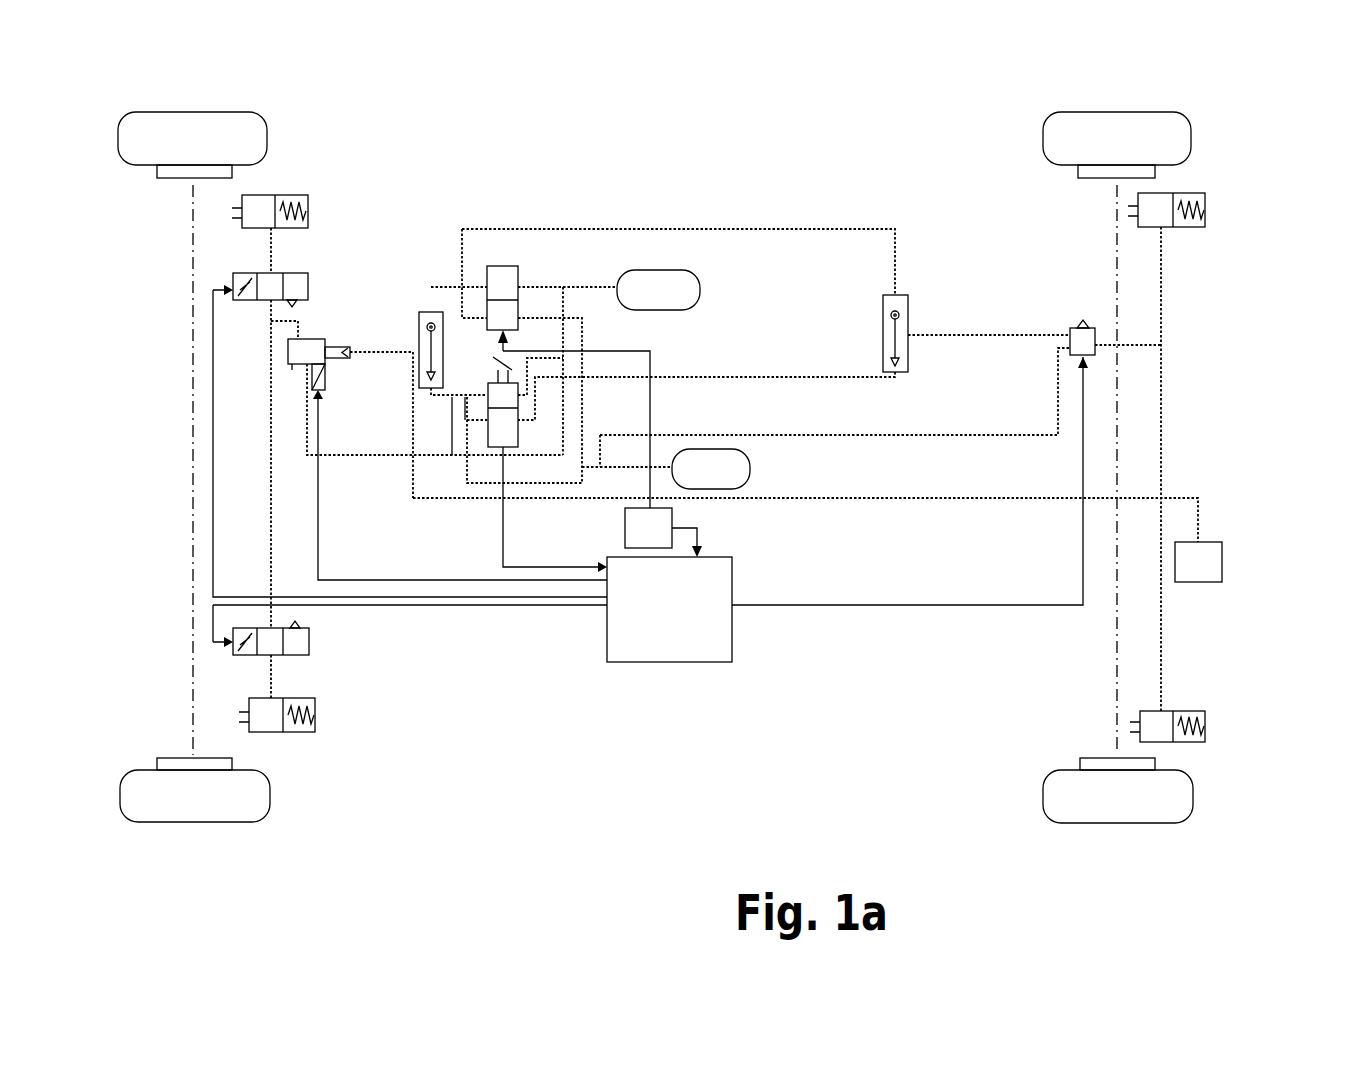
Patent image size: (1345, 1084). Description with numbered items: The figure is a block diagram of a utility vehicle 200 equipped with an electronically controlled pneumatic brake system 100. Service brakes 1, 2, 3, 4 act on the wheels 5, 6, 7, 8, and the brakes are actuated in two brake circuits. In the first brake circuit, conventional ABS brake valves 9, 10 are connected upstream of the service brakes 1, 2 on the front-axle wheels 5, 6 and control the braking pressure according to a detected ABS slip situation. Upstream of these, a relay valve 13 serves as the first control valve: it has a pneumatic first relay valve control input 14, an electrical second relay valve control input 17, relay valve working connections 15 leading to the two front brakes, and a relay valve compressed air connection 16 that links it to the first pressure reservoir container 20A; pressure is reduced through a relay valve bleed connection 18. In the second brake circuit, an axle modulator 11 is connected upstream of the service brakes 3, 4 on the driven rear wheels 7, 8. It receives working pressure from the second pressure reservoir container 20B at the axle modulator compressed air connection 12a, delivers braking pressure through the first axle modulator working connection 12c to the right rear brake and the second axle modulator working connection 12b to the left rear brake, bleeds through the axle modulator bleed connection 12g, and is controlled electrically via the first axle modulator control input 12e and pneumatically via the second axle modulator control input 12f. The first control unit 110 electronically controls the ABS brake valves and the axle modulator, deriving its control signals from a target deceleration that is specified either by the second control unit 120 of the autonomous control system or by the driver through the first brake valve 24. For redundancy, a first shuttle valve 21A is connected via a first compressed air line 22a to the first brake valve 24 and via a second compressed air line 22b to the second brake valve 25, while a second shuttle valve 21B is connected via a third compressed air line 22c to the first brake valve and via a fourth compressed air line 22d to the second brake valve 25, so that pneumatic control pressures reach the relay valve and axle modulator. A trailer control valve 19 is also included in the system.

The service brake 1 is at (308, 208).
The service brake 2 is at (315, 715).
The service brake 3 is at (1205, 210).
The service brake 4 is at (1205, 727).
The wheel 5 is at (267, 138).
The wheel 6 is at (270, 797).
The wheel 7 is at (1191, 140).
The wheel 8 is at (1043, 795).
The ABS brake valve 9 is at (308, 287).
The ABS brake valve 10 is at (309, 642).
The axle modulator 11 is at (1092, 360).
The axle modulator compressed air connection 12a is at (1068, 352).
The second axle modulator working connection 12b is at (1112, 352).
The first axle modulator working connection 12c is at (1115, 335).
The first axle modulator control input 12e is at (1078, 357).
The second axle modulator control input 12f is at (1068, 338).
The axle modulator bleed connection 12g is at (1082, 323).
The relay valve 13 is at (287, 347).
The first relay valve control input 14 is at (351, 352).
The relay valve working connection 15 is at (277, 333).
The relay valve compressed air connection 16 is at (310, 375).
The second relay valve control input 17 is at (323, 398).
The relay valve bleed connection 18 is at (292, 364).
The trailer control valve 19 is at (1223, 573).
The first pressure reservoir container 20A is at (700, 290).
The second pressure reservoir container 20B is at (750, 468).
The first shuttle valve 21A is at (418, 305).
The second shuttle valve 21B is at (883, 333).
The first compressed air line 22a is at (452, 455).
The second compressed air line 22b is at (447, 285).
The third compressed air line 22c is at (832, 378).
The fourth compressed air line 22d is at (815, 229).
The first brake valve 24 is at (495, 437).
The second brake valve 25 is at (503, 265).
The pneumatic brake system 100 is at (510, 780).
The first control unit 110 is at (670, 662).
The second control unit 120 is at (627, 542).
The utility vehicle 200 is at (760, 152).